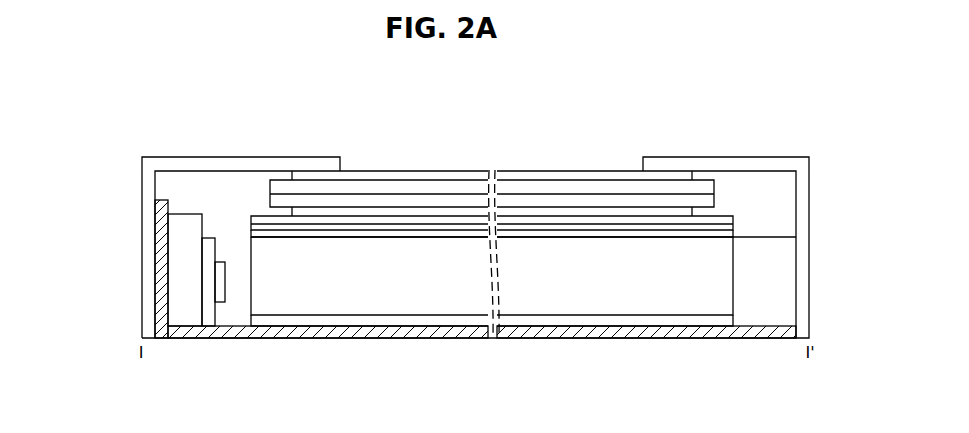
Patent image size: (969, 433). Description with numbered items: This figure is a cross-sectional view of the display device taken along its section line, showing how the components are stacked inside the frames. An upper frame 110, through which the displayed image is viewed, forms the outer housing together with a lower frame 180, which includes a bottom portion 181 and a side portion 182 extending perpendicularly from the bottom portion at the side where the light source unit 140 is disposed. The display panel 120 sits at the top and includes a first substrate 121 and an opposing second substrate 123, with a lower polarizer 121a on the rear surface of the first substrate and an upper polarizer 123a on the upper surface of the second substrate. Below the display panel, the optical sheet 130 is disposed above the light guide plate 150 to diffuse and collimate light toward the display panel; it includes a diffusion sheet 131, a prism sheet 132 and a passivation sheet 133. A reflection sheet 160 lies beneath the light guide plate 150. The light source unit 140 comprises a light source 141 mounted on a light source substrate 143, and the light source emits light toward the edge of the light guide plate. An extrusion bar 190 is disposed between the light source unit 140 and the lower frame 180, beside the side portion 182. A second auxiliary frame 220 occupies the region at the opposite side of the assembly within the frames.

The upper frame 110 is at (728, 164).
The display panel 120 is at (492, 152).
The first substrate 121 is at (388, 130).
The lower polarizer 121a is at (302, 212).
The second substrate 123 is at (385, 190).
The upper polarizer 123a is at (334, 176).
The optical sheet 130 is at (492, 167).
The diffusion sheet 131 is at (520, 135).
The prism sheet 132 is at (562, 228).
The passivation sheet 133 is at (519, 220).
The light source unit 140 is at (135, 282).
The light source 141 is at (221, 283).
The light source substrate 143 is at (208, 258).
The light guide plate 150 is at (557, 294).
The reflection sheet 160 is at (625, 320).
The lower frame 180 is at (475, 308).
The bottom portion 181 is at (235, 330).
The side portion 182 is at (173, 290).
The extrusion bar 190 is at (185, 230).
The second auxiliary frame 220 is at (767, 281).